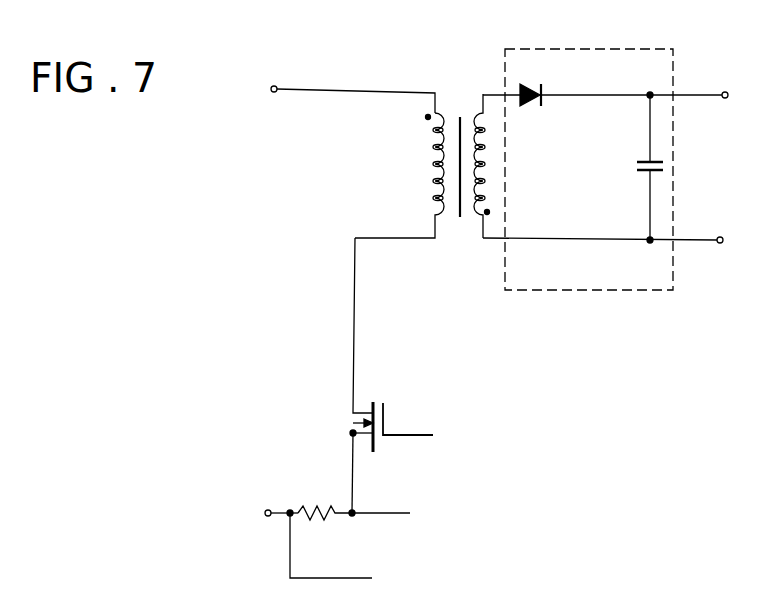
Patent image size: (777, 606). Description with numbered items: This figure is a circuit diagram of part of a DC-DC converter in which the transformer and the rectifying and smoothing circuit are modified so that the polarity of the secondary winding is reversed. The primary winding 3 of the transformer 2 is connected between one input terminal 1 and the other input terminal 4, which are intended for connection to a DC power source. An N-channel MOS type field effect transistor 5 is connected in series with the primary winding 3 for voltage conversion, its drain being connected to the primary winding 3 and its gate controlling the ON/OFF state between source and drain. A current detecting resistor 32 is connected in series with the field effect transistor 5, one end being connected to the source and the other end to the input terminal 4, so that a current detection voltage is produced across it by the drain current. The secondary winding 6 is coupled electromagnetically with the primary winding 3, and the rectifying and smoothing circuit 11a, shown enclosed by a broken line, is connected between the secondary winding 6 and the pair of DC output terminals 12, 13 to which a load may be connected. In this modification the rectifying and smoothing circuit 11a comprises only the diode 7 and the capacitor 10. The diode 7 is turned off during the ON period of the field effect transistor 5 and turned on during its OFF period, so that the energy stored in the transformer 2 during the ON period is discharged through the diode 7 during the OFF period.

The input terminal 1 is at (349, 85).
The transformer 2 is at (461, 114).
The primary winding 3 is at (430, 147).
The input terminal 4 is at (268, 509).
The field effect transistor 5 is at (349, 422).
The secondary winding 6 is at (469, 214).
The diode 7 is at (543, 88).
The capacitor 10 is at (646, 161).
The rectifying and smoothing circuit 11a is at (586, 49).
The DC output terminal 12 is at (725, 81).
The DC output terminal 13 is at (720, 236).
The current detecting resistor 32 is at (320, 510).